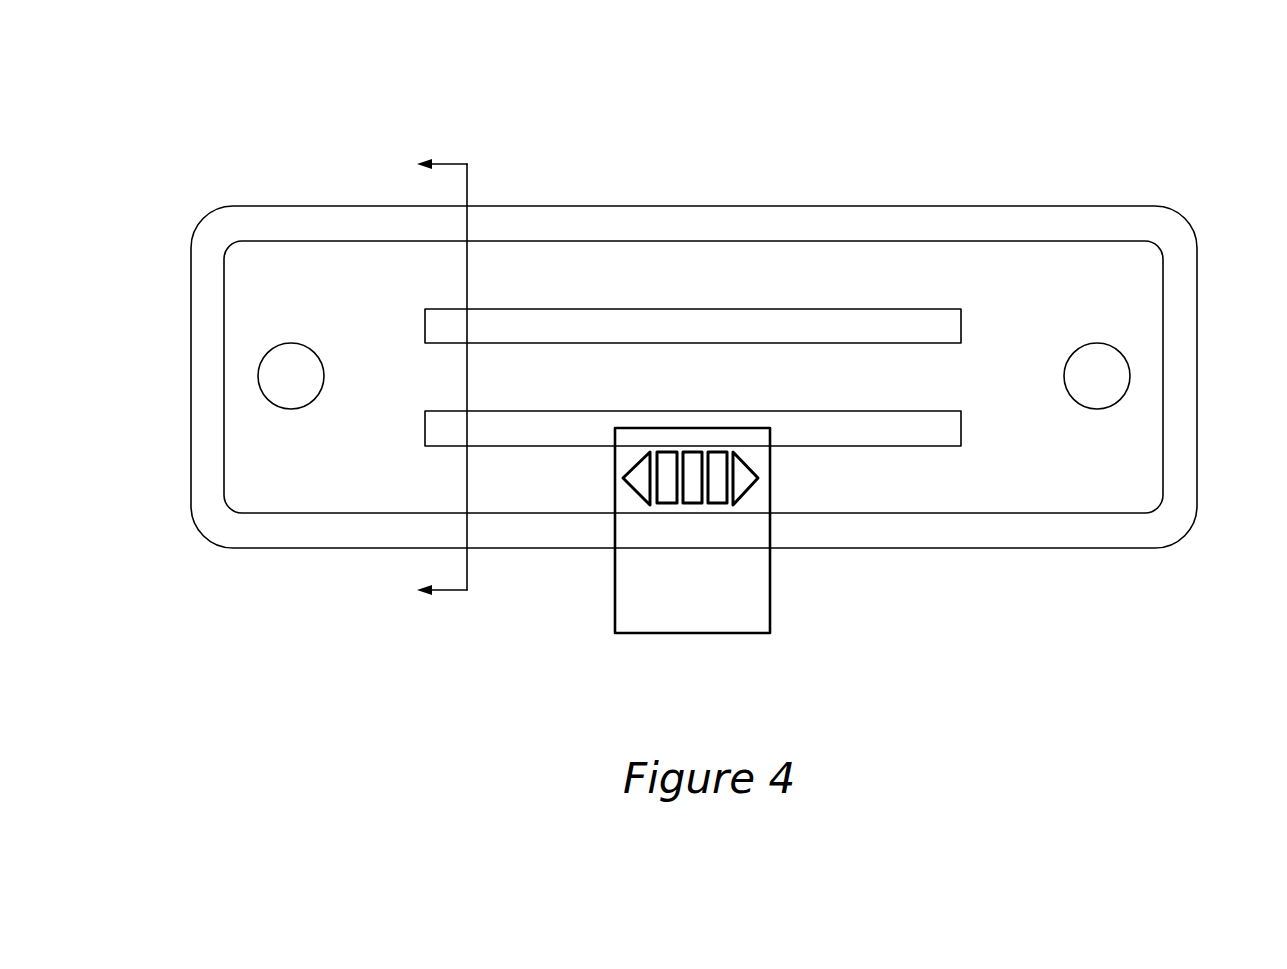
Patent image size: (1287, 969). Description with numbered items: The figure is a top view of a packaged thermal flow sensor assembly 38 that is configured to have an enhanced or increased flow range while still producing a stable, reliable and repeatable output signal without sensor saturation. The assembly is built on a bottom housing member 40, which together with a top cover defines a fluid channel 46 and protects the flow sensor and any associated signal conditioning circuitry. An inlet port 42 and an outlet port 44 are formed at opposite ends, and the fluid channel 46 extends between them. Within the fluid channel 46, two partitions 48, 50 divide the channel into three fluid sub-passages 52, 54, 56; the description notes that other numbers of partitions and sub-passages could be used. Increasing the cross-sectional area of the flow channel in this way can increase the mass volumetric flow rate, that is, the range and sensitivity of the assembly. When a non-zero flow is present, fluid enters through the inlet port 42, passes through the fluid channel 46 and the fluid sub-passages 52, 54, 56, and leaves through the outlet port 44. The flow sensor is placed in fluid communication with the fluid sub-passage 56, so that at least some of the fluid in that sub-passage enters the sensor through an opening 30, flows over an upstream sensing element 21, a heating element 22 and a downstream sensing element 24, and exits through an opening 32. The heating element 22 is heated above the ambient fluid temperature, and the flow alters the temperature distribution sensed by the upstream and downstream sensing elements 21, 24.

The flow sensor assembly 38 is at (1100, 90).
The bottom housing member 40 is at (217, 210).
The fluid sub-passage 52 is at (832, 267).
The fluid channel 46 is at (372, 278).
The inlet port 42 is at (272, 371).
The outlet port 44 is at (1117, 371).
The partition 48 is at (930, 309).
The partition 50 is at (930, 411).
The fluid sub-passage 54 is at (892, 370).
The fluid sub-passage 56 is at (895, 477).
The opening 30 is at (636, 480).
The opening 32 is at (748, 480).
The upstream sensing element 21 is at (667, 503).
The heating element 22 is at (693, 503).
The downstream sensing element 24 is at (717, 503).